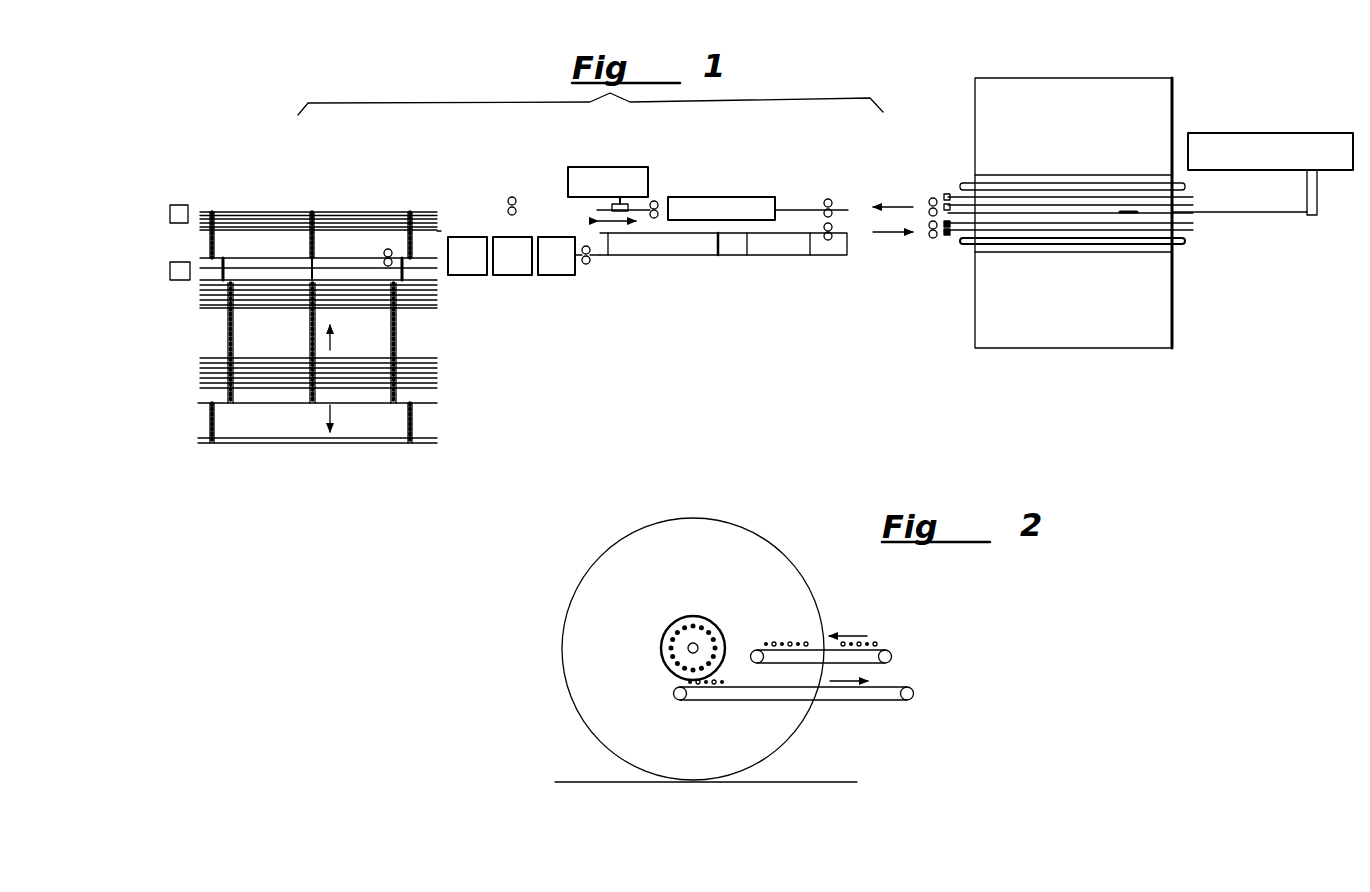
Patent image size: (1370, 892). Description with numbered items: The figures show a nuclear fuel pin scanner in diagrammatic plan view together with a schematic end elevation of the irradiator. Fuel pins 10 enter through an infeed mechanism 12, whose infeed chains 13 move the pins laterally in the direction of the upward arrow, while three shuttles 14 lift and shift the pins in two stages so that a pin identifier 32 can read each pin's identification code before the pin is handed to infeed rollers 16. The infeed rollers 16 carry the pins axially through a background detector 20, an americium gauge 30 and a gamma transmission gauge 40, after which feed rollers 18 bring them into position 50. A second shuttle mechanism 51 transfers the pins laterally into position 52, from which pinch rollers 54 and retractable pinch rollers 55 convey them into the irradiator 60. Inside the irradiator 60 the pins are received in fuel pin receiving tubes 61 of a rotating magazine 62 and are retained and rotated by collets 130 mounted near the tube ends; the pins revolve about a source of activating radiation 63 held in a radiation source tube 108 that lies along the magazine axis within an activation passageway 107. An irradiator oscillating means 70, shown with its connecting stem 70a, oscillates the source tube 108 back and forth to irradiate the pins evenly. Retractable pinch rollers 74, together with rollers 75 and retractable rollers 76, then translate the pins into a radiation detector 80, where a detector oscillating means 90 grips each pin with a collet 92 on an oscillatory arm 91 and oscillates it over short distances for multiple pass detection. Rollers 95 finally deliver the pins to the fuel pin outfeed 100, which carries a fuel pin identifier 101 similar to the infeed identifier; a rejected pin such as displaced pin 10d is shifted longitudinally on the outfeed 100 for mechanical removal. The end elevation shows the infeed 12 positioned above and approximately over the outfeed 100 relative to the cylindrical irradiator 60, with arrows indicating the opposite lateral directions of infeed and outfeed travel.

In FIG. 1, the fuel pins 10 is at (437, 287).
In FIG. 1, the displaced pin 10d is at (445, 231).
In FIG. 1, the infeed mechanism 12 is at (464, 344).
In FIG. 2, the infeed mechanism 12 is at (880, 648).
In FIG. 1, the infeed chains 13 is at (310, 338).
In FIG. 1, the shuttles 14 is at (310, 268).
In FIG. 1, the infeed rollers 16 is at (384, 256).
In FIG. 1, the feed rollers 18 is at (586, 265).
In FIG. 1, the background detector 20 is at (458, 252).
In FIG. 1, the americium gauge 30 is at (512, 276).
In FIG. 1, the pin identifier 32 is at (170, 272).
In FIG. 1, the gamma transmission gauge 40 is at (550, 250).
In FIG. 1, the position 50 is at (690, 255).
In FIG. 1, the second shuttle mechanism 51 is at (608, 245).
In FIG. 1, the position 52 is at (745, 233).
In FIG. 1, the pinch rollers 54 is at (833, 240).
In FIG. 1, the pinch rollers 55 is at (933, 239).
In FIG. 1, the irradiator 60 is at (973, 316).
In FIG. 2, the irradiator 60 is at (826, 614).
In FIG. 1, the fuel pin receiving tubes 61 is at (967, 247).
In FIG. 2, the fuel pin receiving tubes 61 is at (712, 631).
In FIG. 1, the rotating magazine 62 is at (1180, 250).
In FIG. 2, the rotating magazine 62 is at (728, 645).
In FIG. 1, the source of activating radiation 63 is at (1128, 214).
In FIG. 1, the irradiator oscillating means 70 is at (1255, 150).
In FIG. 1, the drive stem 70a is at (1307, 190).
In FIG. 1, the retractable pinch rollers 74 is at (929, 200).
In FIG. 1, the rollers 75 is at (832, 198).
In FIG. 1, the rollers 76 is at (660, 204).
In FIG. 1, the radiation detector 80 is at (760, 200).
In FIG. 1, the detector oscillating means 90 is at (573, 173).
In FIG. 1, the oscillatory arm 91 is at (628, 195).
In FIG. 1, the collet 92 is at (616, 206).
In FIG. 1, the rollers 95 is at (512, 196).
In FIG. 1, the fuel pin outfeed 100 is at (370, 212).
In FIG. 2, the fuel pin outfeed 100 is at (895, 690).
In FIG. 1, the fuel pin identifier 101 is at (180, 205).
In FIG. 2, the activation passageway 107 is at (689, 650).
In FIG. 1, the radiation source tube 108 is at (1215, 214).
In FIG. 1, the collets 130 is at (946, 193).